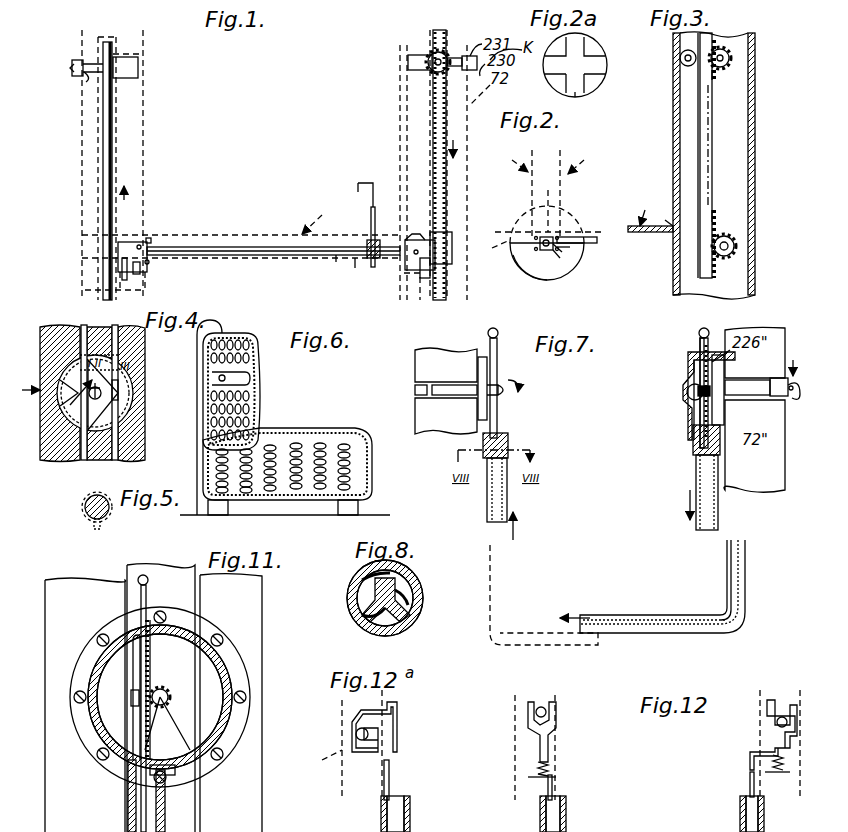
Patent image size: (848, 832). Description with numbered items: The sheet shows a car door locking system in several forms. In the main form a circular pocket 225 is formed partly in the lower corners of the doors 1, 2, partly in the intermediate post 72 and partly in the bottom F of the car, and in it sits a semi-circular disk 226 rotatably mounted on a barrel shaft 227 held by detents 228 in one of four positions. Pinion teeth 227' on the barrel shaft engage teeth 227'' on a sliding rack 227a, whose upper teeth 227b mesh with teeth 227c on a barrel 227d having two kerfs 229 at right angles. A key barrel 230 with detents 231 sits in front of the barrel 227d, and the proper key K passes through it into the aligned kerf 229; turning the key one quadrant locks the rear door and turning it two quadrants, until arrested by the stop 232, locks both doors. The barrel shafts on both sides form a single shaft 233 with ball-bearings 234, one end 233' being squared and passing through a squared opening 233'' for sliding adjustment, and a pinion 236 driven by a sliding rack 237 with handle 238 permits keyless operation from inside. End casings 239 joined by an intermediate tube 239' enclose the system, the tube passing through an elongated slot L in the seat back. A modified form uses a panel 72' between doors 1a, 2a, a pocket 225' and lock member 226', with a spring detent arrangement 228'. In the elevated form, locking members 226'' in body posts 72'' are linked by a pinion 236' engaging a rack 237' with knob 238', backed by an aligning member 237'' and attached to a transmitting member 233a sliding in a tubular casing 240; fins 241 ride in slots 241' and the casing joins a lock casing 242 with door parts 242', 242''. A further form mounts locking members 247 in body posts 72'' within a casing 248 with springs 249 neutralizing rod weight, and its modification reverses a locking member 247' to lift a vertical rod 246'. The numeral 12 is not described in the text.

In FIG. 2, the door 1 is at (581, 159).
In FIG. 4, the front door 1a is at (135, 437).
In FIG. 2, the door 2 is at (516, 158).
In FIG. 4, the rear door 2a is at (72, 440).
In FIG. 2, the support 12 is at (546, 199).
In FIG. 1, the intermediate post 72 is at (143, 171).
In FIG. 3, the intermediate post 72 is at (727, 165).
In FIG. 4, the panel or post 72' is at (107, 402).
In FIG. 12A, the panel or post 72' is at (317, 761).
In FIG. 7, the body post 72'' is at (446, 416).
In FIG. 12, the body post 72'' is at (769, 802).
In FIG. 2, the circular pocket 225 is at (537, 228).
In FIG. 4, the circular pocket 225 is at (95, 421).
In FIG. 2, the pocket 225' is at (513, 268).
In FIG. 1, the semi-circular plate or disk 226 is at (411, 291).
In FIG. 2, the semi-circular plate or disk 226 is at (591, 260).
In FIG. 4, the lock member 226' is at (134, 370).
In FIG. 7, the locking member 226'' is at (451, 384).
In FIG. 11, the locking member 226'' is at (173, 675).
In FIG. 1, the barrel shaft 227 is at (392, 260).
In FIG. 2, the pinion teeth 227' is at (538, 273).
In FIG. 3, the pinion teeth 227' is at (752, 233).
In FIG. 1, the teeth 227'' is at (468, 262).
In FIG. 3, the teeth 227'' is at (754, 205).
In FIG. 1, the sliding rack 227a is at (432, 150).
In FIG. 3, the sliding rack 227a is at (698, 96).
In FIG. 1, the teeth 227b is at (478, 22).
In FIG. 3, the teeth 227b is at (712, 77).
In FIG. 1, the teeth 227c is at (432, 72).
In FIG. 3, the teeth 227c is at (728, 48).
In FIG. 1, the barrel 227d is at (138, 68).
In FIG. 2A, the barrel 227d is at (604, 45).
In FIG. 3, the barrel 227d is at (730, 56).
In FIG. 1, the detents 228 is at (268, 275).
In FIG. 5, the spring detent arrangement 228' is at (116, 513).
In FIG. 2A, the kerfs 229 is at (578, 97).
In FIG. 1, the key barrel 230 is at (86, 78).
In FIG. 1, the detents 231 is at (84, 62).
In FIG. 2, the stop 232 is at (590, 242).
In FIG. 1, the shaft 233 is at (321, 269).
In FIG. 2, the squared end 233' is at (591, 268).
In FIG. 2, the squared opening 233'' is at (587, 279).
In FIG. 7, the transmitting member 233a is at (727, 555).
In FIG. 8, the transmitting member 233a is at (365, 615).
In FIG. 11, the transmitting member 233a is at (145, 814).
In FIG. 1, the ball-bearings 234 is at (150, 238).
In FIG. 1, the pinion 236 is at (332, 282).
In FIG. 7, the pinion 236' is at (672, 398).
In FIG. 11, the pinion 236' is at (195, 745).
In FIG. 1, the sliding rack 237 is at (353, 237).
In FIG. 7, the rack 237' is at (670, 393).
In FIG. 11, the rack 237' is at (192, 674).
In FIG. 11, the aligning member 237'' is at (96, 689).
In FIG. 1, the operating handle 238 is at (351, 185).
In FIG. 7, the knob 238' is at (679, 384).
In FIG. 11, the knob 238' is at (161, 701).
In FIG. 1, the end casings 239 is at (258, 220).
In FIG. 6, the end casings 239 is at (200, 389).
In FIG. 4, the intermediate tube or casing 239' is at (140, 394).
In FIG. 7, the tubular casing 240 is at (705, 578).
In FIG. 8, the tubular casing 240 is at (410, 582).
In FIG. 7, the fins 241 is at (680, 477).
In FIG. 8, the fins 241 is at (435, 602).
In FIG. 8, the slots 241' is at (413, 565).
In FIG. 7, the lock casing 242 is at (685, 396).
In FIG. 8, the lock casing 242 is at (364, 598).
In FIG. 11, the lock casing 242 is at (160, 678).
In FIG. 11, the door part 242' is at (150, 697).
In FIG. 11, the door part 242'' is at (160, 697).
In FIG. 12A, the vertical rod 246' is at (427, 796).
In FIG. 12, the locking member 247 is at (662, 732).
In FIG. 12A, the locking member 247' is at (402, 727).
In FIG. 12, the casing 248 is at (583, 803).
In FIG. 12, the springs 249 is at (535, 768).
In FIG. 1, the key K is at (70, 68).
In FIG. 7, the key K is at (794, 372).
In FIG. 1, the bottom F is at (315, 216).
In FIG. 2, the bottom F is at (495, 247).
In FIG. 3, the bottom F is at (650, 213).
In FIG. 6, the elongated slot L is at (250, 372).